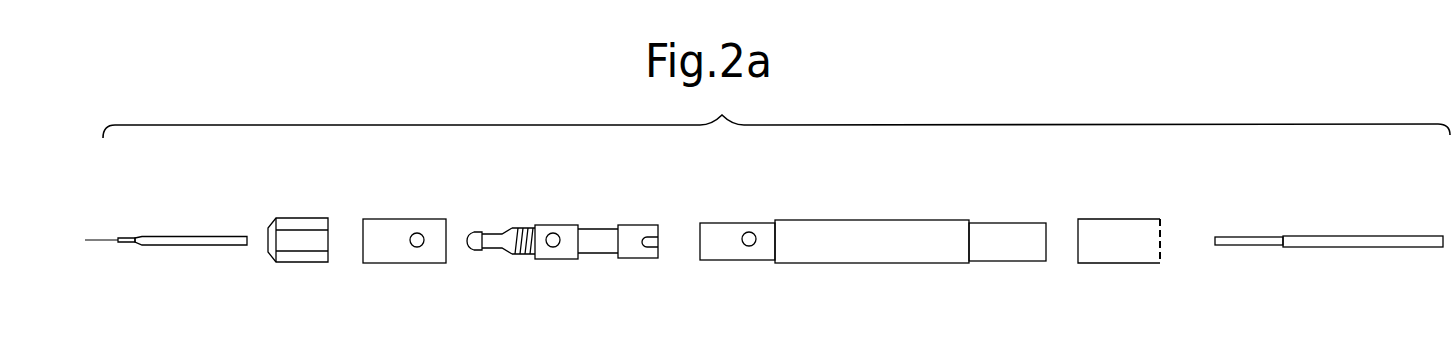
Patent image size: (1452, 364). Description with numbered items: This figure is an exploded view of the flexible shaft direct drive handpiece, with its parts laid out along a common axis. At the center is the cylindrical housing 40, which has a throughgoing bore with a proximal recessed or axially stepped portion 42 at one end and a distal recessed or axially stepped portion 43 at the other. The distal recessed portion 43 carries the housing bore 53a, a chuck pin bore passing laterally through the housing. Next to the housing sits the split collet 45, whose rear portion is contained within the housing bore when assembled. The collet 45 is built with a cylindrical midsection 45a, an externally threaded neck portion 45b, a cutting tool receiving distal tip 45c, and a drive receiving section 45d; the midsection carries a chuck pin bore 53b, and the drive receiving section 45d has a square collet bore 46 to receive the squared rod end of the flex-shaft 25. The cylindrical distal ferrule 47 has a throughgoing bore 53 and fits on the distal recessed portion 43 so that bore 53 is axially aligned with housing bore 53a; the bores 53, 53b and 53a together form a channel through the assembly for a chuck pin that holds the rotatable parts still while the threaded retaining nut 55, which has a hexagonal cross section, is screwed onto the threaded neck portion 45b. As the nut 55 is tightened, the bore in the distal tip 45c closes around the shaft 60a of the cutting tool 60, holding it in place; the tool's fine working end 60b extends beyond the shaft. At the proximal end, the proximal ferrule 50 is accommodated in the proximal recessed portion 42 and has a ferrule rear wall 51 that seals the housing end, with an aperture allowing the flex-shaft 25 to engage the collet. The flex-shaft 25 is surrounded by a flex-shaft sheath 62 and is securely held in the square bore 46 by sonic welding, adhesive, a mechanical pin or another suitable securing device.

The cutting tool 60 is at (166, 234).
The shaft of the cutting tool 60a is at (213, 244).
The optical fiber 60b is at (102, 242).
The threaded retaining nut 55 is at (290, 222).
The distal ferrule 47 is at (404, 235).
The throughgoing bore of distal ferrule 53 is at (412, 246).
The split collet 45 is at (582, 227).
The cylindrical midsection 45a is at (567, 274).
The externally threaded neck portion 45b is at (521, 228).
The cutting tool receiving distal tip 45c is at (490, 232).
The drive receiving section 45d is at (670, 207).
The square collet bore 46 is at (660, 241).
The chuck pin bore of collet 53b is at (551, 248).
The distal recessed portion 43 is at (756, 238).
The housing bore 53a is at (752, 232).
The cylindrical housing 40 is at (910, 242).
The proximal recessed portion 42 is at (1000, 230).
The proximal ferrule 50 is at (1151, 205).
The ferrule rear wall 51 is at (1167, 227).
The flex-shaft 25 is at (1257, 246).
The flex-shaft sheath 62 is at (1373, 237).